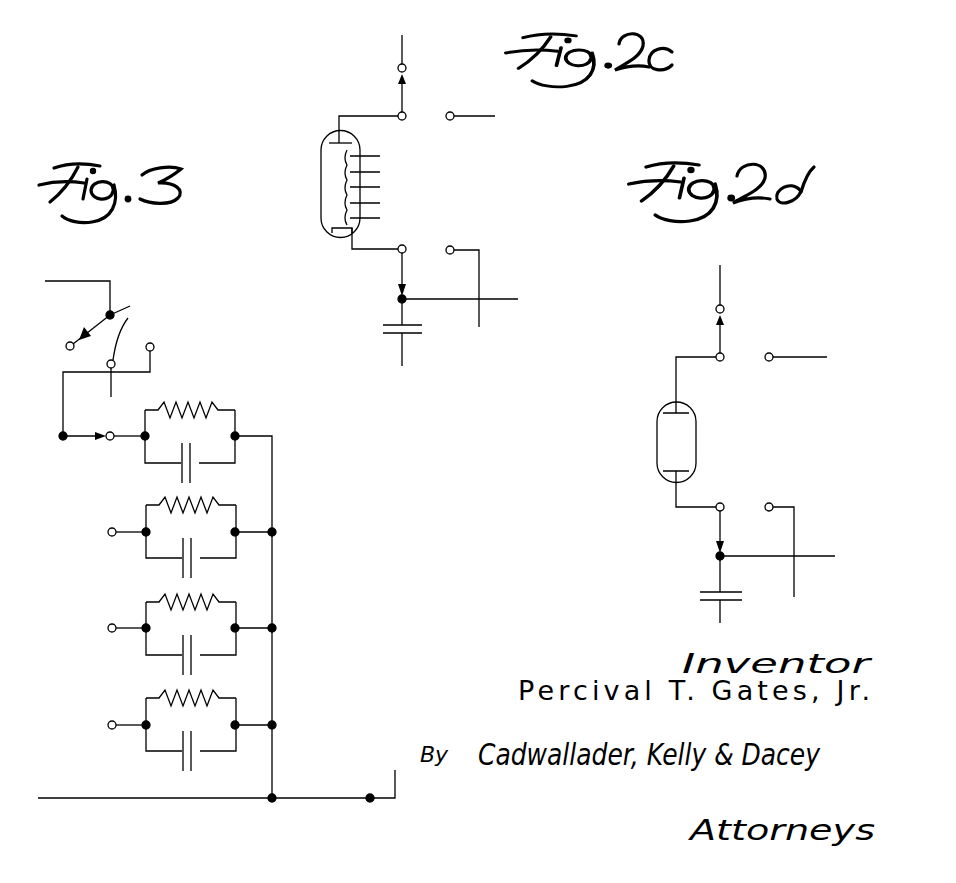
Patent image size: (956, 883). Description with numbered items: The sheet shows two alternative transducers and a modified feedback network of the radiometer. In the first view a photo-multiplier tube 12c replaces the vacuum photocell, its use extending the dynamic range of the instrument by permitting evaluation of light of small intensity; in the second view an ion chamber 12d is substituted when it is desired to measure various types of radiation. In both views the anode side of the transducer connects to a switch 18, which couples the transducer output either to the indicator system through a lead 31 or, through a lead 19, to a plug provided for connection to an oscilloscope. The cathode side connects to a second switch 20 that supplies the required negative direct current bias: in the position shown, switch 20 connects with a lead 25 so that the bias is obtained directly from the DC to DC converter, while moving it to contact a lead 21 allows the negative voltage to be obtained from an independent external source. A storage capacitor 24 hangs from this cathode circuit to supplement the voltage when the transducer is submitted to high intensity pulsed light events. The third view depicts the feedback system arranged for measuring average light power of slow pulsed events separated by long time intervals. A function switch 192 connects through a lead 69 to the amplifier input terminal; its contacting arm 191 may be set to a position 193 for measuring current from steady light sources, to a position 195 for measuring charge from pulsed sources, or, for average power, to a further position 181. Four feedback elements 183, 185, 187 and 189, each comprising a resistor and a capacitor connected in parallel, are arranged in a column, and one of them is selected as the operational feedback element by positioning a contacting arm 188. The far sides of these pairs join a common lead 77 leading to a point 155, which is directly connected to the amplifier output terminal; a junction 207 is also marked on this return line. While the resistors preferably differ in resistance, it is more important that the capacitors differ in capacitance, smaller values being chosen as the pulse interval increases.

In FIG. 2C, the photo-multiplier tube 12c is at (321, 183).
In FIG. 2D, the ion chamber 12d is at (657, 440).
In FIG. 2C, the switch 18 is at (405, 96).
In FIG. 2D, the switch 18 is at (724, 337).
In FIG. 2C, the lead 19 is at (483, 114).
In FIG. 2D, the lead 19 is at (803, 355).
In FIG. 2C, the switch 20 is at (400, 270).
In FIG. 2D, the switch 20 is at (716, 526).
In FIG. 2C, the lead 21 is at (469, 250).
In FIG. 2D, the lead 21 is at (790, 505).
In FIG. 2C, the storage capacitor 24 is at (397, 337).
In FIG. 2D, the storage capacitor 24 is at (710, 604).
In FIG. 2C, the lead 25 is at (486, 302).
In FIG. 2D, the lead 25 is at (806, 560).
In FIG. 2C, the lead 31 is at (400, 50).
In FIG. 2D, the lead 31 is at (722, 283).
In FIG. 3, the lead 69 is at (109, 281).
In FIG. 3, the lead 77 is at (85, 797).
In FIG. 3, the point 155 is at (370, 796).
In FIG. 3, the position 181 is at (154, 347).
In FIG. 3, the paired parallel connected resistor and capacitor 183 is at (141, 449).
In FIG. 3, the paired parallel connected resistor and capacitor 185 is at (144, 550).
In FIG. 3, the paired parallel connected resistor and capacitor 187 is at (144, 647).
In FIG. 3, the contacting arm 188 is at (80, 440).
In FIG. 3, the paired parallel connected resistor and capacitor 189 is at (146, 741).
In FIG. 3, the contacting arm 191 is at (101, 321).
In FIG. 3, the function switch 192 is at (141, 297).
In FIG. 3, the position 193 is at (66, 343).
In FIG. 3, the position 195 is at (140, 353).
In FIG. 3, the junction 207 is at (275, 797).